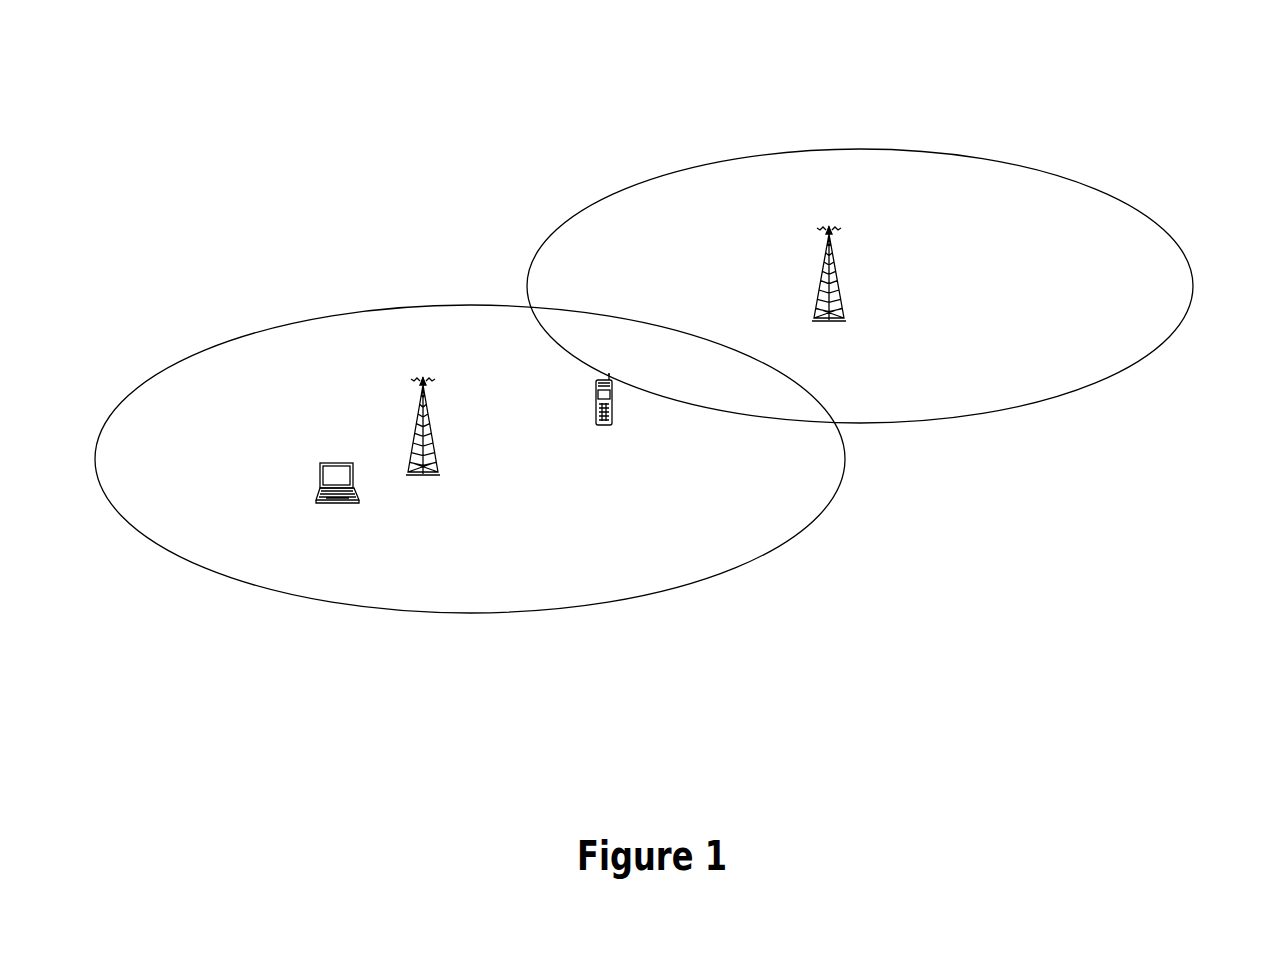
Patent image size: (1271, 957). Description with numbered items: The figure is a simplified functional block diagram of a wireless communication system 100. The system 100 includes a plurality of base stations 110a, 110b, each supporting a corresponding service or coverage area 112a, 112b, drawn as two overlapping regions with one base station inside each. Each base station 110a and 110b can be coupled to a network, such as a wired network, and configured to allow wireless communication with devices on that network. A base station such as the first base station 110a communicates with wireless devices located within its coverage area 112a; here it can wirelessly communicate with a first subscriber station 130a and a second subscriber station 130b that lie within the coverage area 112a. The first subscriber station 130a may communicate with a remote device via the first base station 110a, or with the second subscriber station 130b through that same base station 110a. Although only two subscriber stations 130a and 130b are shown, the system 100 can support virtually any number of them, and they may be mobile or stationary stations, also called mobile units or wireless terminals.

The wireless communication system 100 is at (987, 65).
The coverage area 112a is at (385, 305).
The coverage area 112b is at (805, 147).
The first base station 110a is at (445, 432).
The second base station 110b is at (852, 295).
The first subscriber station 130a is at (598, 427).
The second subscriber station 130b is at (310, 482).